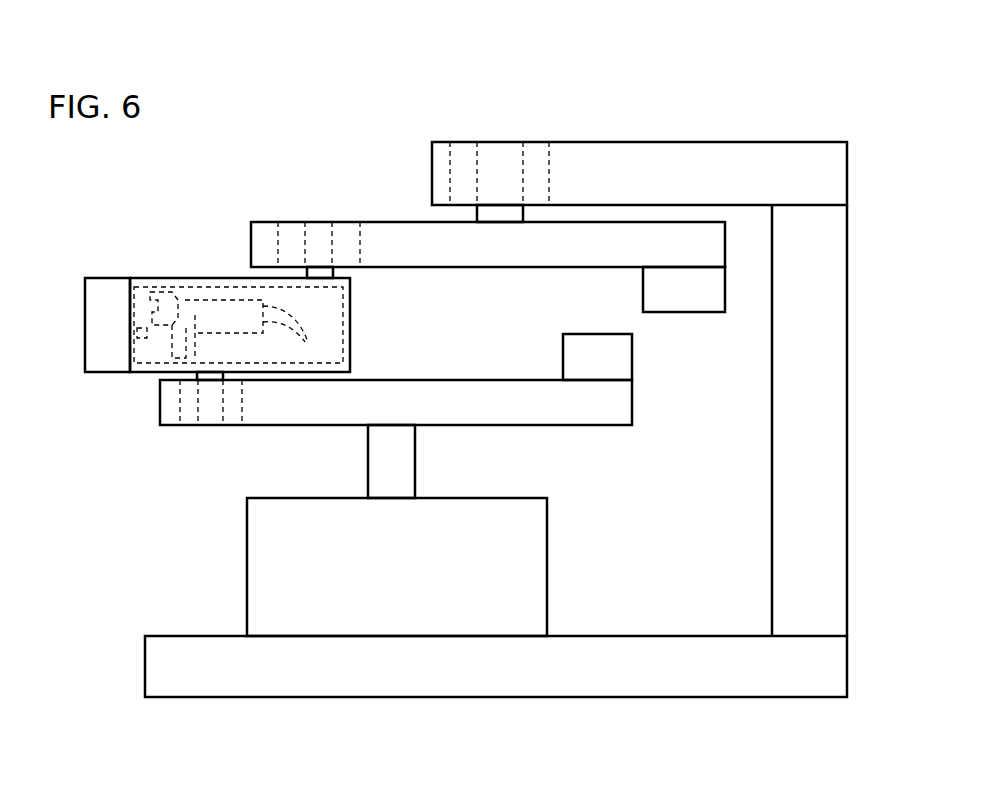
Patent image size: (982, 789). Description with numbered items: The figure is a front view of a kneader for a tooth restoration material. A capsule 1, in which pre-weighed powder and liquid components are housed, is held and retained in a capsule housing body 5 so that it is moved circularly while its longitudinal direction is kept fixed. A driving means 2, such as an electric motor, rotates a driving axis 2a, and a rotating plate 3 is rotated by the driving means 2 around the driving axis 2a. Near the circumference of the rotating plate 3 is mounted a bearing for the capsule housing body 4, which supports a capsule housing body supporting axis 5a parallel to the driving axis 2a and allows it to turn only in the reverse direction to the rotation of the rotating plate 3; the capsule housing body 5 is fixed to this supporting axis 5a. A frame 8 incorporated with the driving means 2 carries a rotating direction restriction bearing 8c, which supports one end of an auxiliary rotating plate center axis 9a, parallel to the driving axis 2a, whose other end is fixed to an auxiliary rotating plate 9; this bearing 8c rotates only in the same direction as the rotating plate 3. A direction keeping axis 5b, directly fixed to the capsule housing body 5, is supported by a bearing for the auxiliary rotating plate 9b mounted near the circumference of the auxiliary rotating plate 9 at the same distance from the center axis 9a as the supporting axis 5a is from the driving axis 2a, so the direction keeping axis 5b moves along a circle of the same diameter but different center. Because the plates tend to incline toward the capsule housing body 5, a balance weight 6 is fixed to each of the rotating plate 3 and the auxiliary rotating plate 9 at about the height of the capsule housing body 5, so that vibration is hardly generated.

The capsule for a tooth restoration material 1 is at (207, 290).
The driving means 2 is at (268, 565).
The driving axis 2a is at (388, 462).
The rotating plate 3 is at (566, 415).
The bearing for a capsule housing body 4 is at (237, 425).
The capsule housing body 5 is at (103, 322).
The capsule housing body supporting axis 5a is at (207, 425).
The direction keeping axis 5b is at (322, 215).
The balance weight 6 is at (608, 355).
The frame 8 is at (784, 165).
The rotating direction restriction bearing 8c is at (538, 165).
The auxiliary rotating plate 9 is at (406, 228).
The auxiliary rotating plate center axis 9a is at (497, 162).
The bearing for the auxiliary rotating plate 9b is at (287, 215).